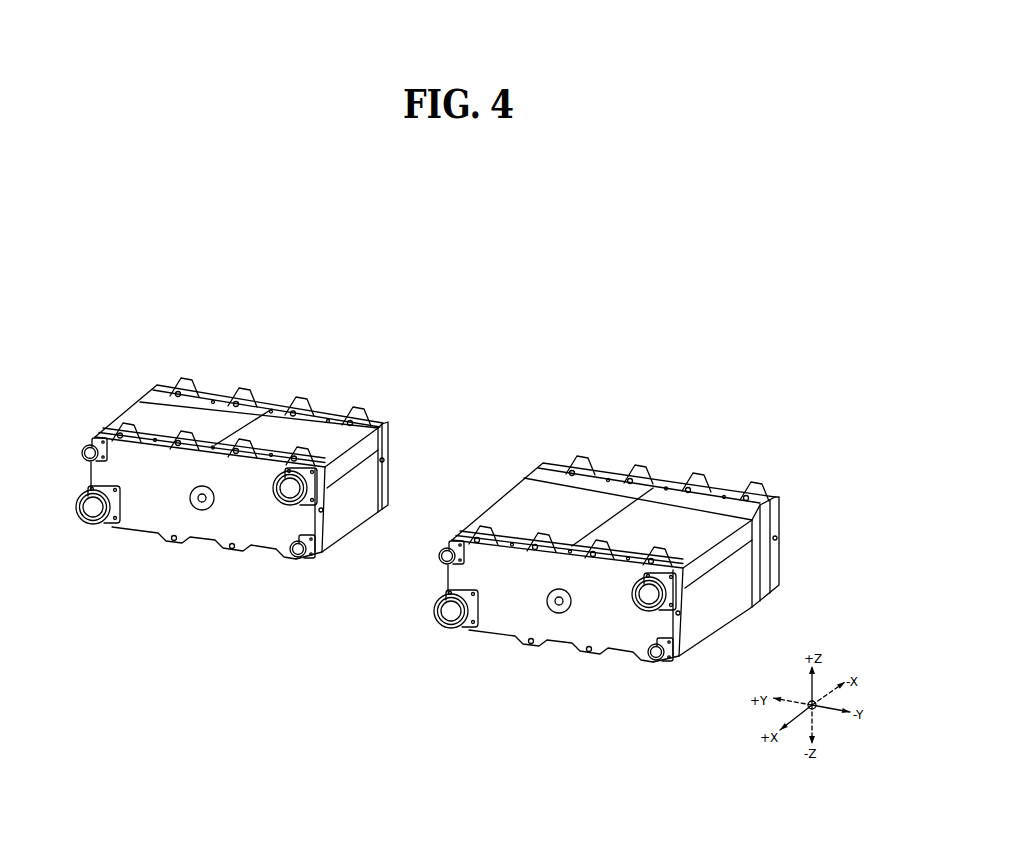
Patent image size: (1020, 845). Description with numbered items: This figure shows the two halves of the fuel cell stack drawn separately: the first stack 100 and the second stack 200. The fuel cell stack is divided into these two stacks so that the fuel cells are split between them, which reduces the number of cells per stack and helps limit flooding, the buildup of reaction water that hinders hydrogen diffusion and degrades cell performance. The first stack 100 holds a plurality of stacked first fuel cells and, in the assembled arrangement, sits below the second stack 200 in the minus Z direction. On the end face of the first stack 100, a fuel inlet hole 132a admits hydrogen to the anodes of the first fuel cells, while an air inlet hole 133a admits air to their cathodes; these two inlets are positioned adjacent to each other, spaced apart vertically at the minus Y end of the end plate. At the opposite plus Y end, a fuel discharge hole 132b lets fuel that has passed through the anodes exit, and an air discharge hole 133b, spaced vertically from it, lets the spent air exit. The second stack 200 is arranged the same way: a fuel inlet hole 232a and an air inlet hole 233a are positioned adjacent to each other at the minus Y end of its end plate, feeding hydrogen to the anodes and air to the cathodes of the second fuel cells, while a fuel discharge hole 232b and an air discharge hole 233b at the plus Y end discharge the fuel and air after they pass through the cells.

The first stack 100 is at (733, 471).
The second stack 200 is at (338, 397).
The fuel inlet hole 132a is at (662, 658).
The fuel discharge hole 132b is at (446, 550).
The air inlet hole 133a is at (652, 596).
The air discharge hole 133b is at (455, 620).
The fuel inlet hole 232a is at (300, 560).
The fuel discharge hole 232b is at (89, 447).
The air inlet hole 233a is at (288, 470).
The air discharge hole 233b is at (102, 523).